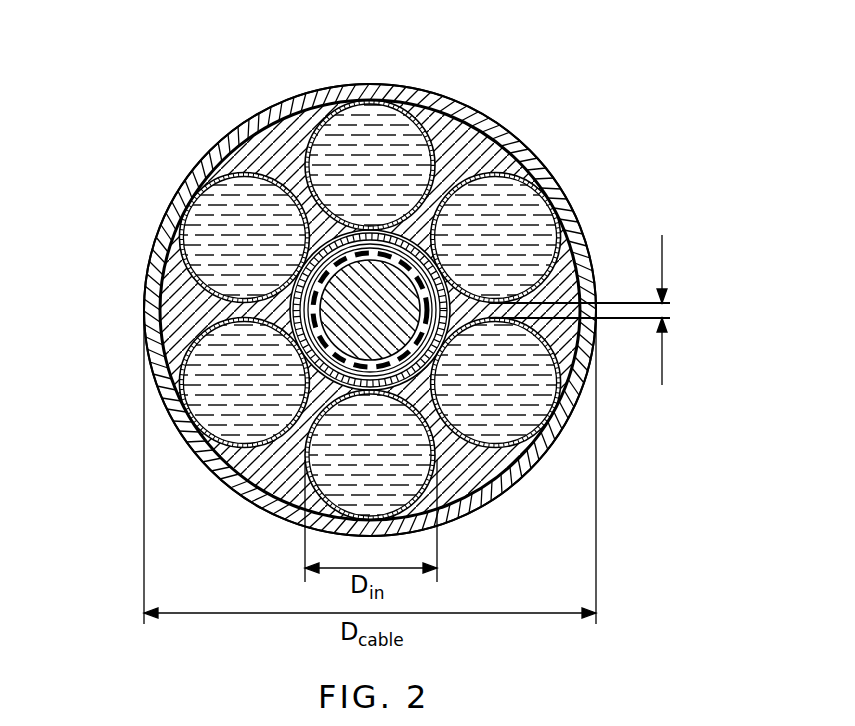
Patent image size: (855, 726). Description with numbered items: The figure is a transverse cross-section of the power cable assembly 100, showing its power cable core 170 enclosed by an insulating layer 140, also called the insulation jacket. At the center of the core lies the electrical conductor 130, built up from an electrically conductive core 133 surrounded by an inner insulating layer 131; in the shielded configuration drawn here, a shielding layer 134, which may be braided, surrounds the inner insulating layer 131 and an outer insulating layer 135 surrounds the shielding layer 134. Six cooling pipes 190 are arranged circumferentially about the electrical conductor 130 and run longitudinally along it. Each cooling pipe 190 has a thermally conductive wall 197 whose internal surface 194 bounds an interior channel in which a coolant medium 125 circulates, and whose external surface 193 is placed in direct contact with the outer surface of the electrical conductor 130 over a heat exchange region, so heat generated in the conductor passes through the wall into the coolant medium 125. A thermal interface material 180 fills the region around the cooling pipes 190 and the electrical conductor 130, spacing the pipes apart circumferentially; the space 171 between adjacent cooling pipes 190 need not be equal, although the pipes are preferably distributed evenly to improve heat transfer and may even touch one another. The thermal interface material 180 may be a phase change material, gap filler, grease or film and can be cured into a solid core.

The power cable assembly 100 is at (635, 155).
The coolant medium 125 is at (392, 135).
The electrical conductor 130 is at (462, 447).
The inner insulating layer 131 is at (284, 150).
The electrically conductive core 133 is at (488, 145).
The shielding layer 134 is at (290, 492).
The outer insulating layer 135 is at (300, 305).
The insulating layer 140 is at (590, 237).
The power cable core 170 is at (508, 468).
The space 171 is at (670, 310).
The thermal interface material 180 is at (523, 172).
The cooling pipe 190 is at (320, 118).
The external surface 193 is at (193, 273).
The internal surface 194 is at (395, 283).
The thermally conductive wall 197 is at (168, 242).